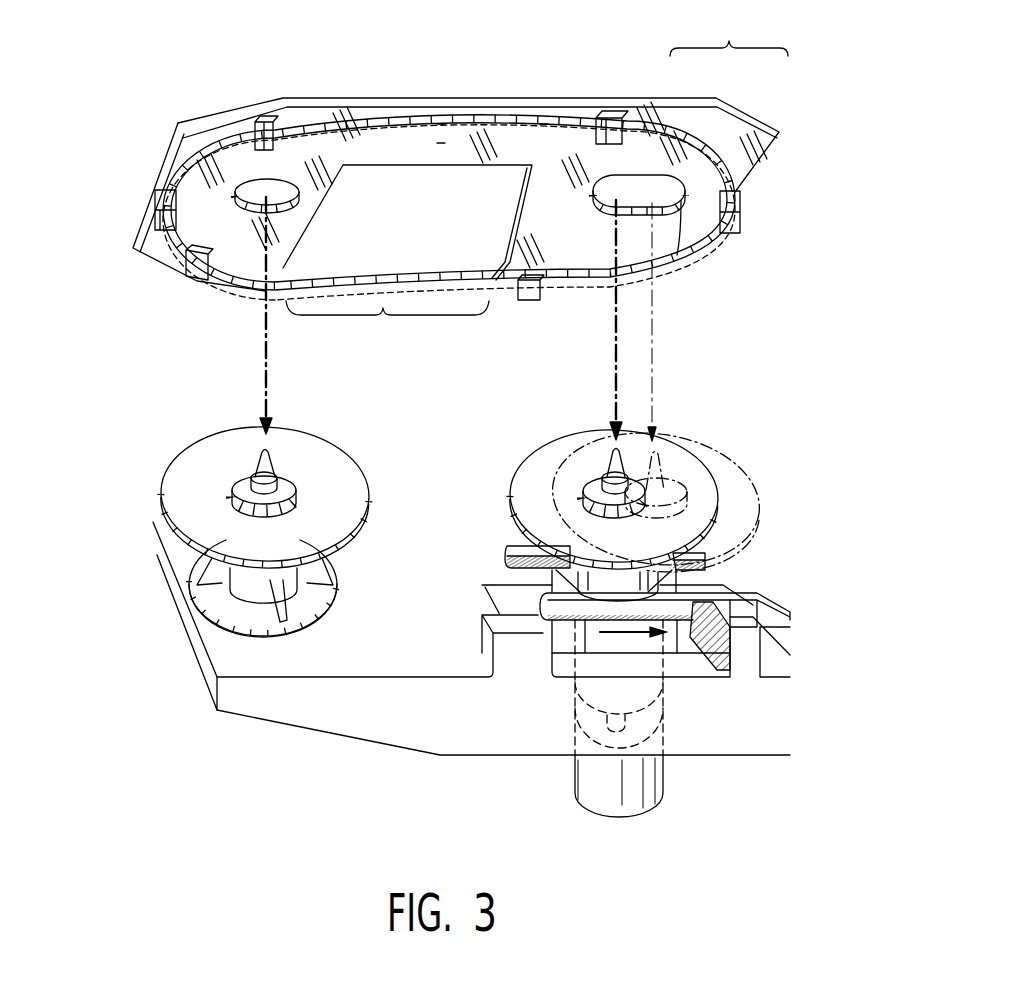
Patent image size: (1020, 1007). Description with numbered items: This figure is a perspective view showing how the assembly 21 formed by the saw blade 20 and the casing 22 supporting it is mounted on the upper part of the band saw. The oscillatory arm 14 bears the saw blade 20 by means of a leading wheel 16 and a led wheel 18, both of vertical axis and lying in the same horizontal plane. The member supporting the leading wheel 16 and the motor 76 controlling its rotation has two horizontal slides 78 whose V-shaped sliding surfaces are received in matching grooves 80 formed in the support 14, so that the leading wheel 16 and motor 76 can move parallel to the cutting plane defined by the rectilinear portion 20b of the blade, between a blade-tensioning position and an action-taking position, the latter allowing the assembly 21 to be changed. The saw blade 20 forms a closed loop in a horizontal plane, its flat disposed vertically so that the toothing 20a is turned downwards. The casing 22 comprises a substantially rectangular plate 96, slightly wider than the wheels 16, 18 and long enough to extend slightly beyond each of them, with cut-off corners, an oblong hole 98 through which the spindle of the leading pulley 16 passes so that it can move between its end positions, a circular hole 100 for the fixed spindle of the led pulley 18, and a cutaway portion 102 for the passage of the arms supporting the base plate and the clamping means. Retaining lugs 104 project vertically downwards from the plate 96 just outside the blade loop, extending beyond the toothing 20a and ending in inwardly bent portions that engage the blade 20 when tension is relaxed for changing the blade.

The oscillatory arm 14 is at (364, 730).
The leading wheel 16 is at (530, 474).
The led wheel 18 is at (338, 482).
The saw blade 20 is at (668, 121).
The toothing 20a is at (540, 137).
The rectilinear portion of the saw blade 20b is at (387, 329).
The blade and casing assembly 21 is at (729, 33).
The casing 22 is at (743, 106).
The motor 76 is at (597, 796).
The horizontal slides 78 is at (540, 600).
The grooves 80 is at (690, 637).
The plate 96 is at (437, 143).
The oblong hole 98 is at (677, 255).
The circular hole 100 is at (283, 201).
The cutaway portion 102 is at (368, 168).
The lugs 104 is at (148, 190).